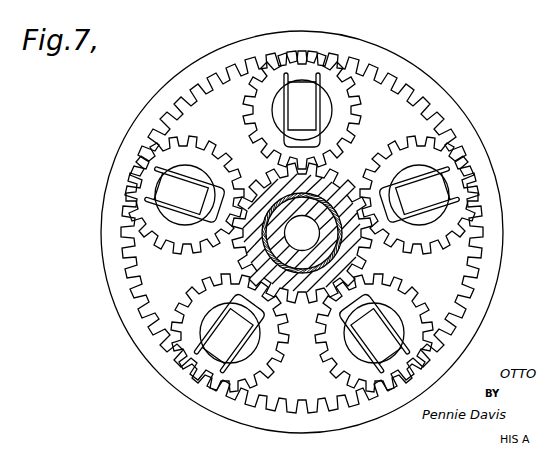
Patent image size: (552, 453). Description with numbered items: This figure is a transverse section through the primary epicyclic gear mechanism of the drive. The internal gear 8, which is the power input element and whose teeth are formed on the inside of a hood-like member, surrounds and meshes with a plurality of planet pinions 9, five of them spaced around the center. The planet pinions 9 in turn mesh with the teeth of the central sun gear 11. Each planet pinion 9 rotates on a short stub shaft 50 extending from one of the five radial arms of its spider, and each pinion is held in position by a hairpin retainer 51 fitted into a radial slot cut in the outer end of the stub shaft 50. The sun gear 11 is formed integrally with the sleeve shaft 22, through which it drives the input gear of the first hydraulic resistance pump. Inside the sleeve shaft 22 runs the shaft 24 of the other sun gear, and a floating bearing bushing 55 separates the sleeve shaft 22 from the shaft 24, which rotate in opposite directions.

The internal gear 8 is at (403, 103).
The planet pinions 9 is at (242, 113).
The sun gear 11 is at (233, 243).
The sleeve shaft 22 is at (263, 177).
The shaft 24 is at (322, 208).
The stub shaft 50 is at (325, 95).
The hairpin retainers 51 is at (312, 137).
The floating bearing bushing 55 is at (330, 250).